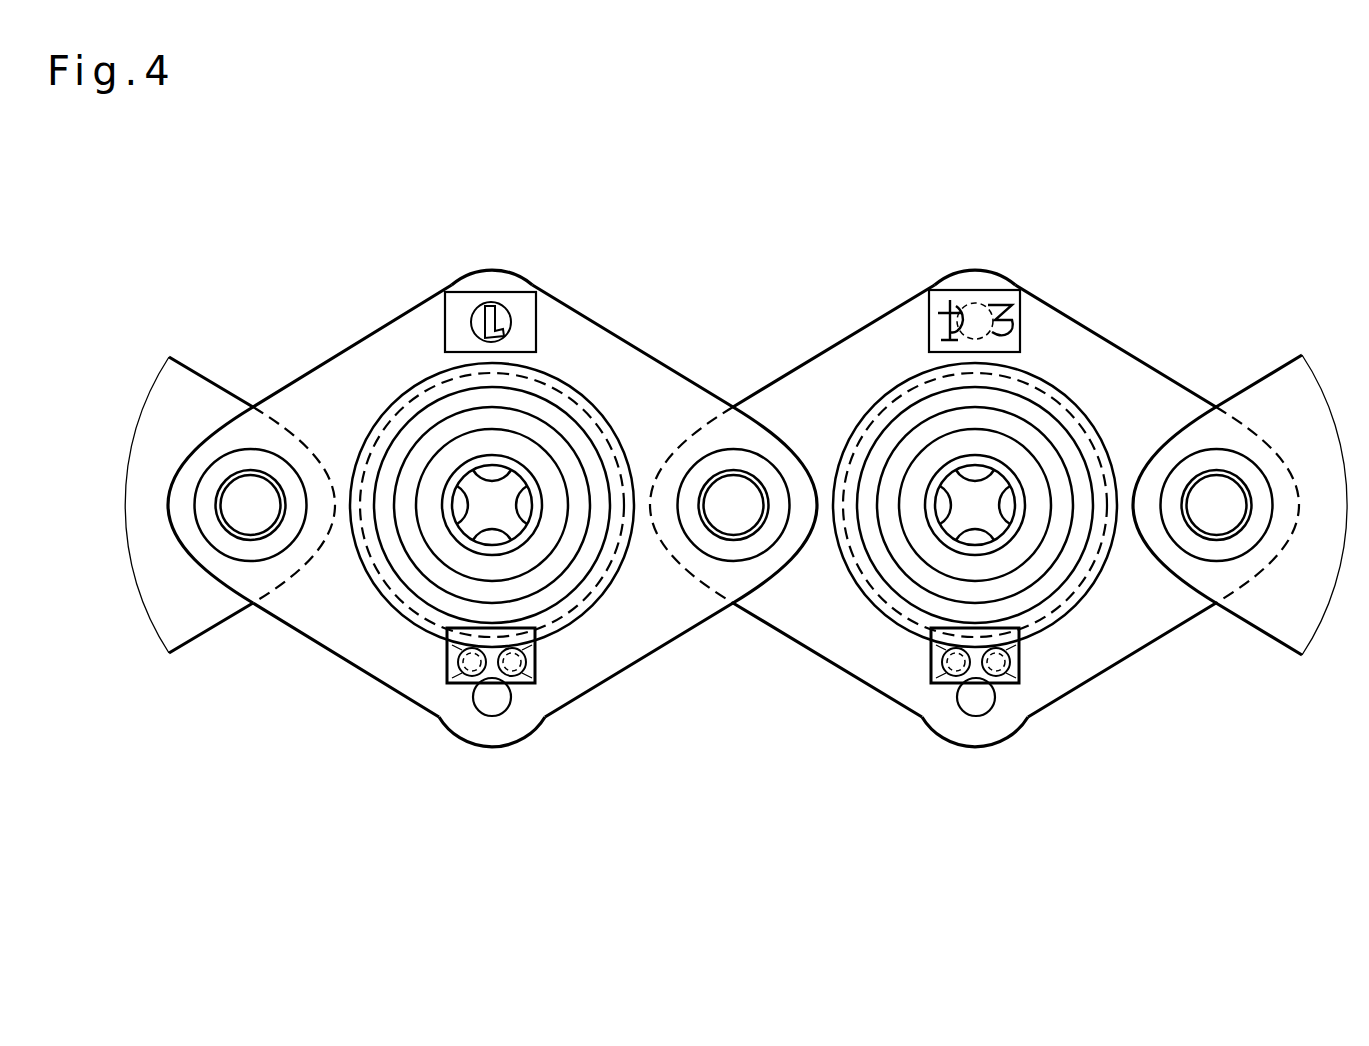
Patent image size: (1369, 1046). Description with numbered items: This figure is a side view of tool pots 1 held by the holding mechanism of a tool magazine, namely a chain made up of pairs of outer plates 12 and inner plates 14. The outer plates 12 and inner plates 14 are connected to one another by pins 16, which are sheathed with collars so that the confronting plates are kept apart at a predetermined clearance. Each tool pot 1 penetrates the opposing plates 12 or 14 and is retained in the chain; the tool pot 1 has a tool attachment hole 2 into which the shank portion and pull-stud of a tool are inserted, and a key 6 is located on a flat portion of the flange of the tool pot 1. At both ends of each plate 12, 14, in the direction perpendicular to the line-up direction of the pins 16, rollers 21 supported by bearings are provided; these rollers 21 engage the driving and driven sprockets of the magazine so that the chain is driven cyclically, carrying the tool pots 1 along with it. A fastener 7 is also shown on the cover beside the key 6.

The tool pot 1 is at (545, 410).
The tool attachment hole 2 is at (408, 563).
The key 6 is at (540, 674).
The screw 7 is at (468, 668).
The outer plate 12 is at (365, 372).
The inner plate 14 is at (828, 385).
The pin 16 is at (253, 512).
The roller 21 is at (490, 268).